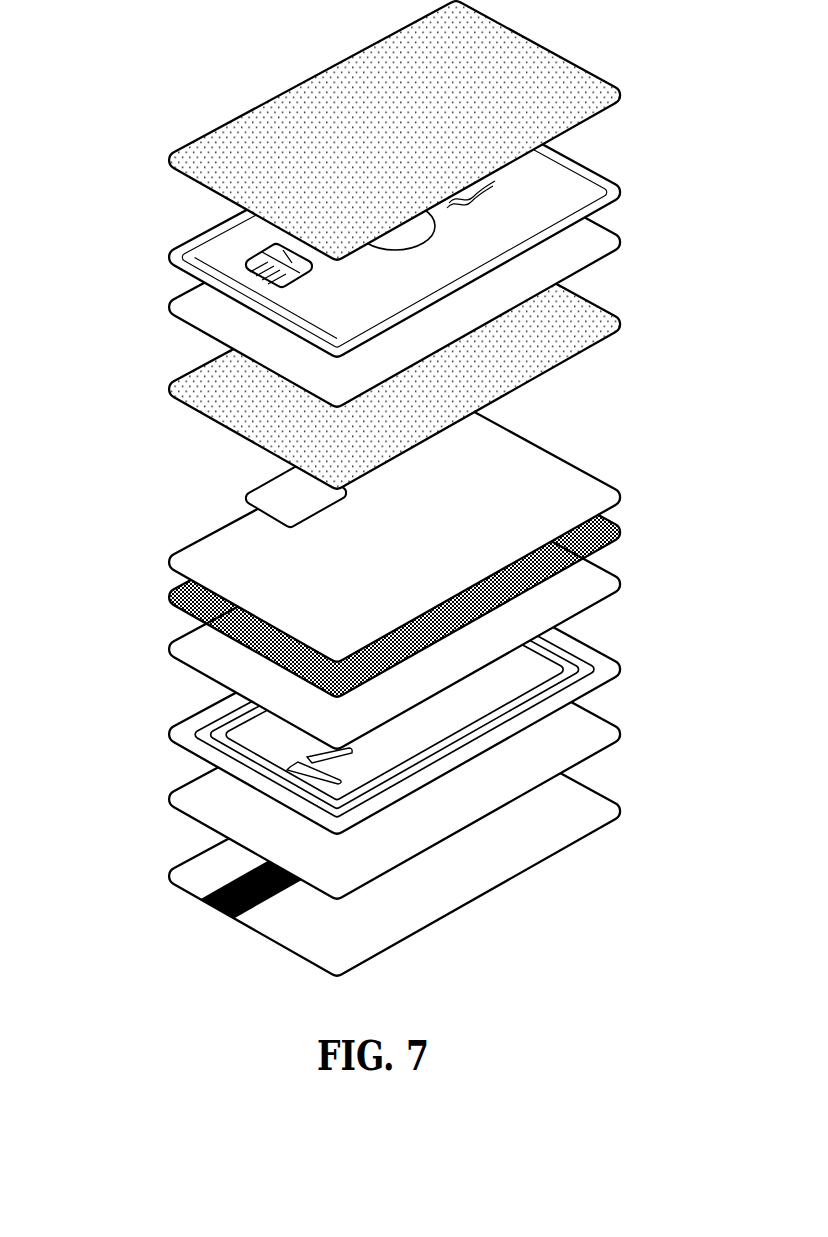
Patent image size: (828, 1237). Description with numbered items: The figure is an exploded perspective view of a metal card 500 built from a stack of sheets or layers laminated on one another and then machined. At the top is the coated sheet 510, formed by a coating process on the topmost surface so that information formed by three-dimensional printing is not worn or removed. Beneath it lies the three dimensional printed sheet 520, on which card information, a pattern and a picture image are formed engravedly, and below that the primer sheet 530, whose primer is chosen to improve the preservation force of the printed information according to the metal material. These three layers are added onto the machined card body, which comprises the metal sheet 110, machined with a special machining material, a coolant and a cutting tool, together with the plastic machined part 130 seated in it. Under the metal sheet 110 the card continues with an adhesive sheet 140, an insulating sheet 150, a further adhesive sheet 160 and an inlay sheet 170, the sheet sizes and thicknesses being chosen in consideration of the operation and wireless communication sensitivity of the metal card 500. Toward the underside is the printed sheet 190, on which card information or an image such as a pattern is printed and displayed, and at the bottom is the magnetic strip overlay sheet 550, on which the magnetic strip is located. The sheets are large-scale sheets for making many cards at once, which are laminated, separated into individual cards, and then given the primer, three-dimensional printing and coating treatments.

The metal card 500 is at (115, 163).
The coated sheet 510 is at (621, 95).
The three dimensional printed sheet 520 is at (621, 192).
The primer sheet 530 is at (621, 242).
The metal sheet 110 is at (621, 324).
The plastic machined part 130 is at (241, 497).
The adhesive sheet 140 is at (621, 497).
The insulating sheet 150 is at (621, 532).
The adhesive sheet 160 is at (621, 584).
The inlay sheet 170 is at (621, 669).
The printed sheet 190 is at (621, 734).
The magnetic strip overlay sheet 550 is at (621, 811).